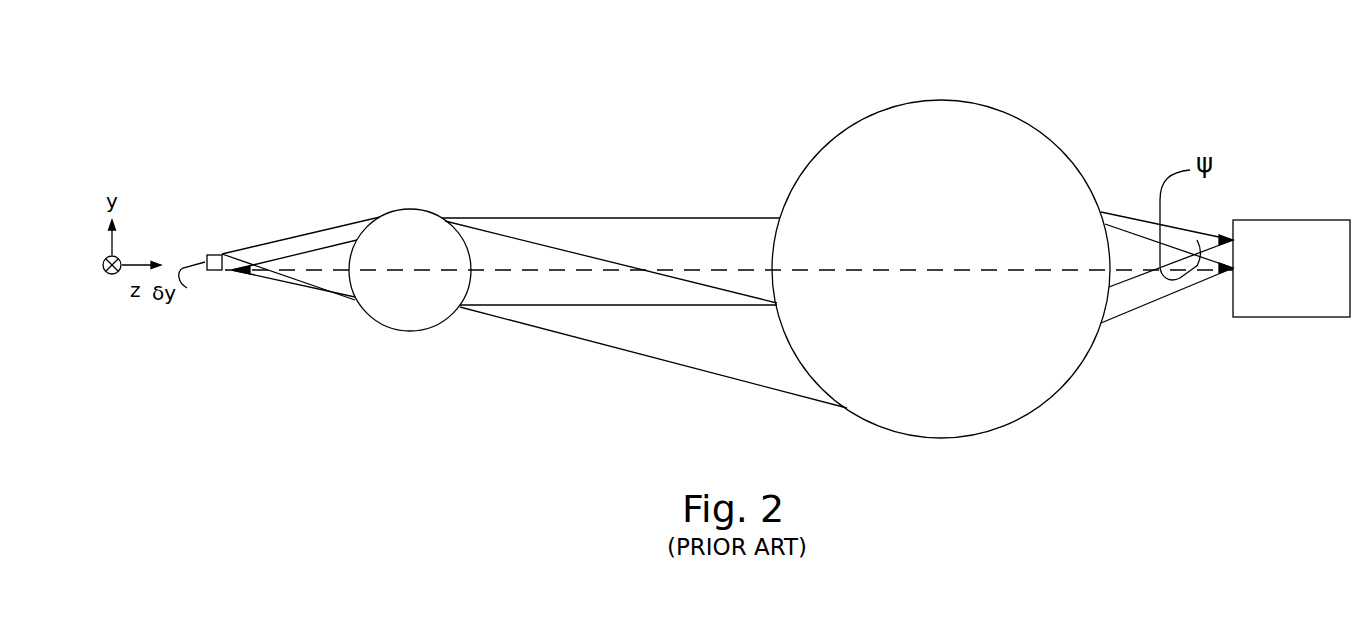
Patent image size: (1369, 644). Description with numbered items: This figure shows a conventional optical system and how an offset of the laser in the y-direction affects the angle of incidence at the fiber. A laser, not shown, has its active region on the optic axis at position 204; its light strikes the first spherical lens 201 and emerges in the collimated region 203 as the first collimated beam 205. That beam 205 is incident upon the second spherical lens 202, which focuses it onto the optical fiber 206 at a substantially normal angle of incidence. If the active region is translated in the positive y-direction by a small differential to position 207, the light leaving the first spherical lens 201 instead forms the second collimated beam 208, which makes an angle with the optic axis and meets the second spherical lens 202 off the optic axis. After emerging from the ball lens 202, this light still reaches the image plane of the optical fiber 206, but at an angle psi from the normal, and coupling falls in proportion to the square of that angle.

The first spherical lens 201 is at (407, 208).
The second spherical lens 202 is at (940, 100).
The collimated region 203 is at (486, 140).
The position of laser active region on optic axis 204 is at (215, 272).
The first collimated beam 205 is at (650, 218).
The optical fiber 206 is at (1317, 220).
The offset position of laser active region 207 is at (207, 255).
The second collimated beam 208 is at (528, 240).